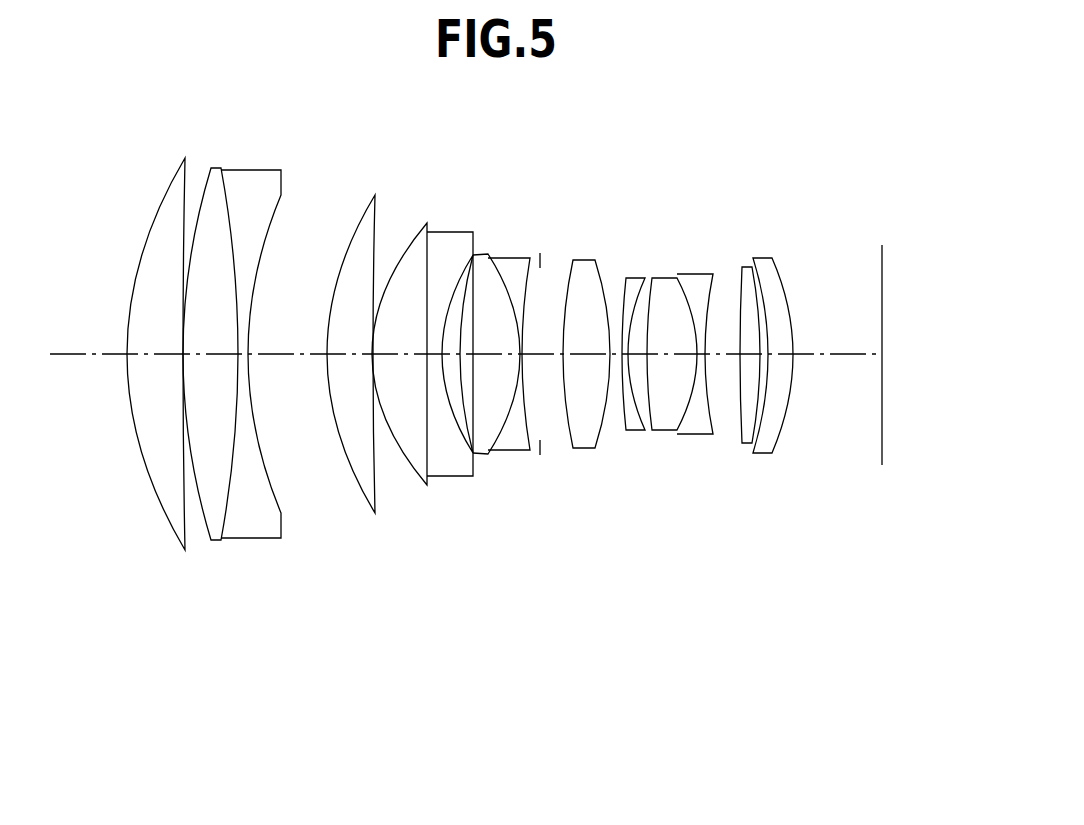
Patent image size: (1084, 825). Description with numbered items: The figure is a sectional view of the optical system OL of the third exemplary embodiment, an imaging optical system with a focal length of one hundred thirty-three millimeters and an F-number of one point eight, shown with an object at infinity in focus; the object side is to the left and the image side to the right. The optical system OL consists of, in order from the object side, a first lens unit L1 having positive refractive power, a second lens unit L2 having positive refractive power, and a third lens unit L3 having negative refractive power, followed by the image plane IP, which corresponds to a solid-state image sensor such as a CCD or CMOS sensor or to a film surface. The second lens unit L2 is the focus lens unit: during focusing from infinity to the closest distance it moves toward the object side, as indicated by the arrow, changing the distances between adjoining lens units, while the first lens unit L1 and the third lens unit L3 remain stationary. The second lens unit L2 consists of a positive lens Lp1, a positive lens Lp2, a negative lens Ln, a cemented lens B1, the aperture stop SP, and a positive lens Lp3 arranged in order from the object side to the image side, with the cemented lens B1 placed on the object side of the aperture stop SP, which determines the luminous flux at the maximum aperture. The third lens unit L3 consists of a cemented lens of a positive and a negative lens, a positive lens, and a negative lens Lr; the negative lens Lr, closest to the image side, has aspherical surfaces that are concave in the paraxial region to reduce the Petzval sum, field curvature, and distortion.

The optical system OL is at (471, 432).
The first lens unit L1 is at (290, 584).
The second lens unit L2 is at (477, 390).
The third lens unit L3 is at (706, 396).
The positive lens Lp1 is at (375, 195).
The positive lens Lp2 is at (427, 222).
The negative lens Ln is at (453, 232).
The cemented lens B1 is at (538, 472).
The aperture stop SP is at (540, 253).
The positive lens Lp3 is at (583, 260).
The negative lens Lr is at (763, 258).
The image plane IP is at (883, 272).